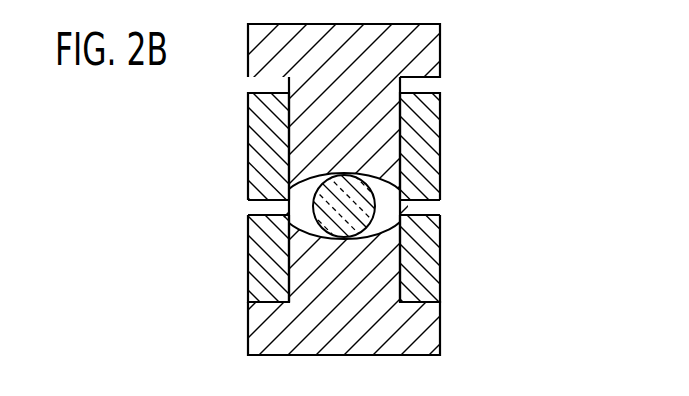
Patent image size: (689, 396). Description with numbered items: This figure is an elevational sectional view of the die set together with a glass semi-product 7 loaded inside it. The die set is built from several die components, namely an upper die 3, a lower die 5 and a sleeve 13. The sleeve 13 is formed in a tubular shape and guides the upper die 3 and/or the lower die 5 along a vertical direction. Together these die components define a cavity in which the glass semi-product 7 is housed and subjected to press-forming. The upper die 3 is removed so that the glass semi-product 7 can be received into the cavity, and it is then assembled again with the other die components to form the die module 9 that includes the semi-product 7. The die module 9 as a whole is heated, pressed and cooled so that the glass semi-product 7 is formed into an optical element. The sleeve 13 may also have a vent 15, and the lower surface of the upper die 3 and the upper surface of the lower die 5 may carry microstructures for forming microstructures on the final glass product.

The upper die 3 is at (440, 53).
The lower die 5 is at (440, 326).
The glass semi-product 7 is at (373, 178).
The die module 9 is at (453, 263).
The sleeve 13 is at (249, 262).
The vent 15 is at (252, 208).